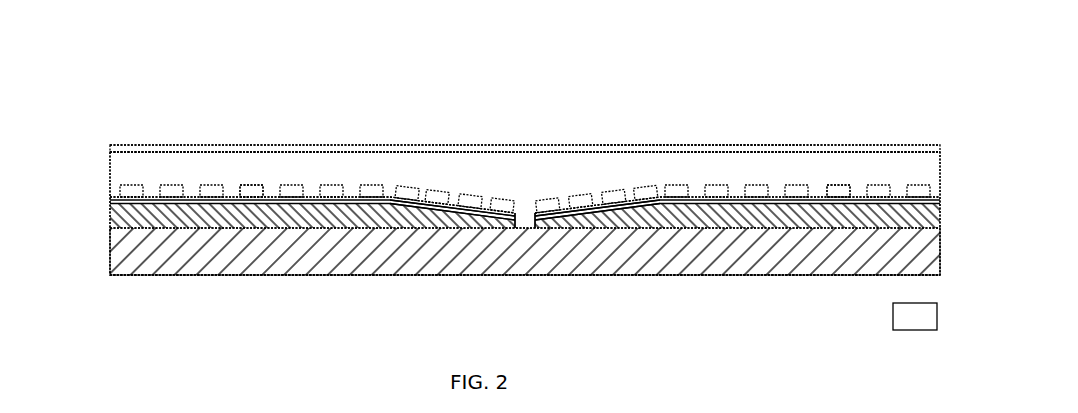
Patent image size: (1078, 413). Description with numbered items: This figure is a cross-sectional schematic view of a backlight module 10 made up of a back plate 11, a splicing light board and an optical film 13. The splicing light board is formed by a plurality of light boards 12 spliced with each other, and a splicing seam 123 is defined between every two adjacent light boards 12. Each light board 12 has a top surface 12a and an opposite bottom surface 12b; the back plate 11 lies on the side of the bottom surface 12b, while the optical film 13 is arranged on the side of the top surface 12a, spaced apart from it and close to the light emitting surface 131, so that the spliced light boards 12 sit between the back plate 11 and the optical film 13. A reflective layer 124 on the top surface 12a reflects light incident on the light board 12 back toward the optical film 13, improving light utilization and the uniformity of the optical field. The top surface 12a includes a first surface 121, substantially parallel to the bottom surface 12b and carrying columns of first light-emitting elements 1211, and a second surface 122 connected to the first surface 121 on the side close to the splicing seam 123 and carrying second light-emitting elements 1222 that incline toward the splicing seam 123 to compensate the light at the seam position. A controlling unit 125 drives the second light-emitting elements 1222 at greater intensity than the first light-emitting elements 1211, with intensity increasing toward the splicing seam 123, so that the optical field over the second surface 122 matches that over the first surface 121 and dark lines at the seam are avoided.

The backlight module 10 is at (138, 41).
The back plate 11 is at (167, 252).
The light board 12 is at (358, 213).
The top surface 12a is at (66, 152).
The bottom surface 12b is at (122, 232).
The first surface 121 is at (882, 212).
The first light-emitting element 1211 is at (253, 187).
The second surface 122 is at (615, 226).
The second light-emitting element 1222 is at (437, 193).
The splicing seam 123 is at (524, 232).
The reflective layer 124 is at (415, 190).
The controlling unit 125 is at (905, 308).
The optical film 13 is at (528, 147).
The light emitting surface 131 is at (697, 141).